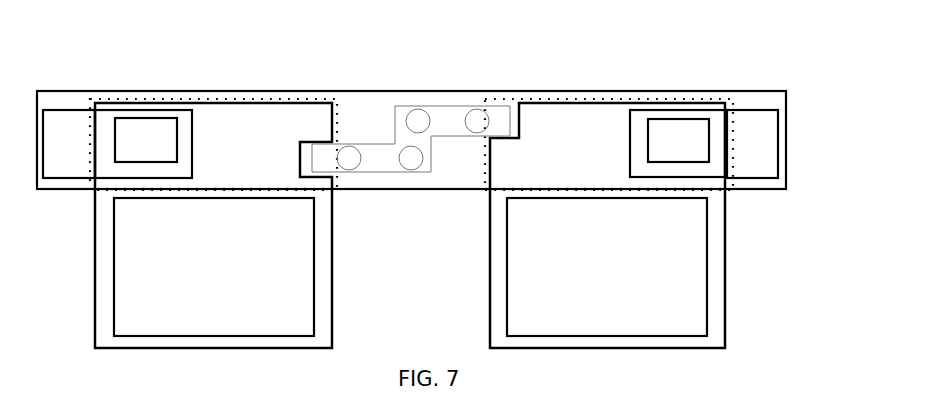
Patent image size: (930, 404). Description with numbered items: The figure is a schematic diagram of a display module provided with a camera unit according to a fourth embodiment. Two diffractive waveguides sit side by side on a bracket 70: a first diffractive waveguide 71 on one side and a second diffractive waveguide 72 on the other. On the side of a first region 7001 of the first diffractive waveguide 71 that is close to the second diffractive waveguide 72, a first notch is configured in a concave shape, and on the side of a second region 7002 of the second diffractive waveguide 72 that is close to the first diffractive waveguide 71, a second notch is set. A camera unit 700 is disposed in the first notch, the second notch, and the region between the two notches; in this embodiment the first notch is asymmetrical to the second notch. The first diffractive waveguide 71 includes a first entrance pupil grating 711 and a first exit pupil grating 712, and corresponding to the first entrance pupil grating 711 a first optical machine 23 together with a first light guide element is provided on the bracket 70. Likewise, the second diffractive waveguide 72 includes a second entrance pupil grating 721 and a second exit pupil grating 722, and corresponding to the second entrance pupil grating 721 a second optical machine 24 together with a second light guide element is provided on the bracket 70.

The first optical machine 23 is at (67, 110).
The second optical machine 24 is at (737, 110).
The bracket 70 is at (433, 91).
The camera unit 700 is at (368, 145).
The first region 7001 is at (88, 167).
The second region 7002 is at (735, 165).
The first diffractive waveguide 71 is at (232, 103).
The first entrance pupil grating 711 is at (146, 118).
The first exit pupil grating 712 is at (316, 229).
The second diffractive waveguide 72 is at (590, 103).
The second entrance pupil grating 721 is at (660, 119).
The second exit pupil grating 722 is at (506, 229).